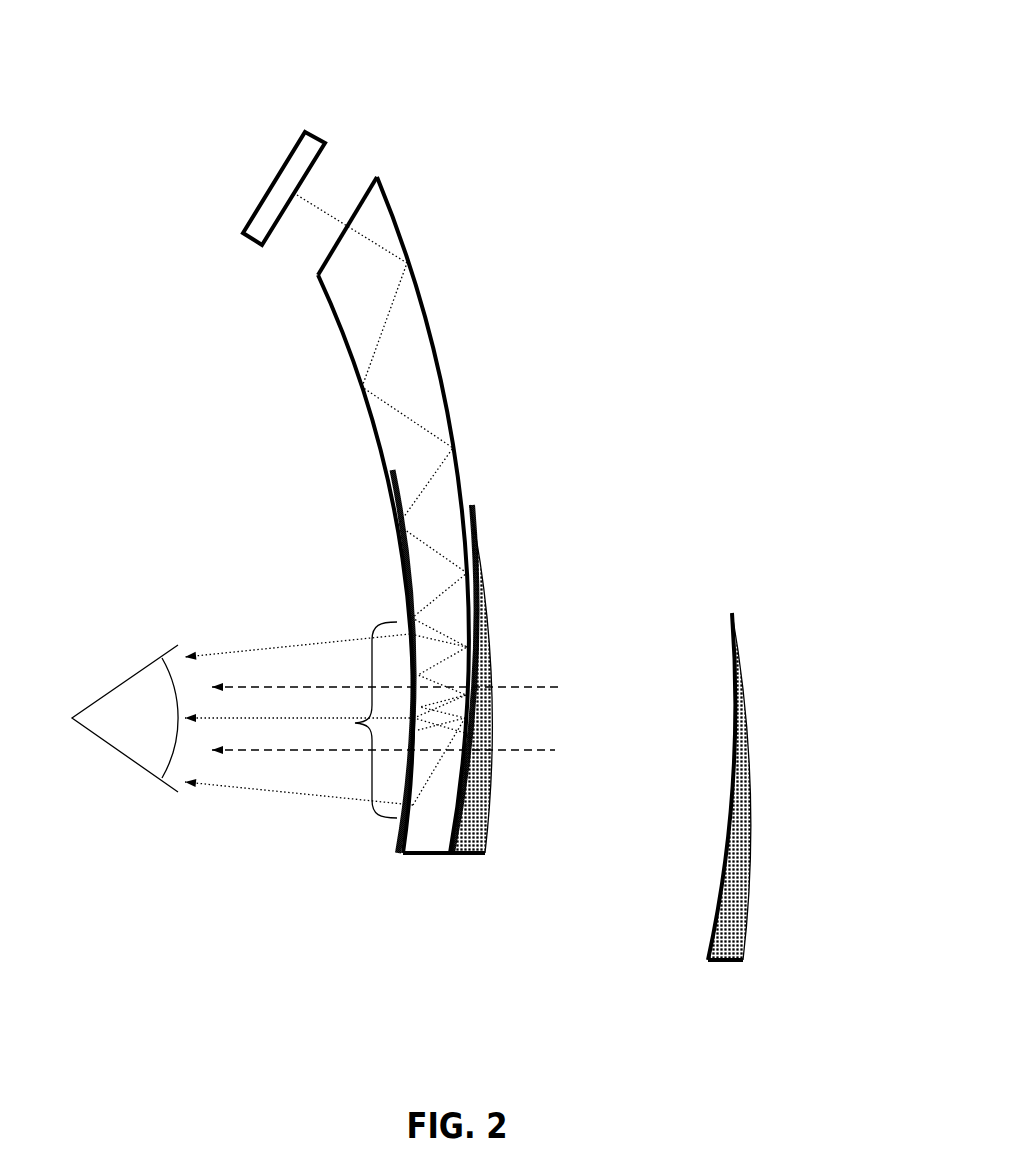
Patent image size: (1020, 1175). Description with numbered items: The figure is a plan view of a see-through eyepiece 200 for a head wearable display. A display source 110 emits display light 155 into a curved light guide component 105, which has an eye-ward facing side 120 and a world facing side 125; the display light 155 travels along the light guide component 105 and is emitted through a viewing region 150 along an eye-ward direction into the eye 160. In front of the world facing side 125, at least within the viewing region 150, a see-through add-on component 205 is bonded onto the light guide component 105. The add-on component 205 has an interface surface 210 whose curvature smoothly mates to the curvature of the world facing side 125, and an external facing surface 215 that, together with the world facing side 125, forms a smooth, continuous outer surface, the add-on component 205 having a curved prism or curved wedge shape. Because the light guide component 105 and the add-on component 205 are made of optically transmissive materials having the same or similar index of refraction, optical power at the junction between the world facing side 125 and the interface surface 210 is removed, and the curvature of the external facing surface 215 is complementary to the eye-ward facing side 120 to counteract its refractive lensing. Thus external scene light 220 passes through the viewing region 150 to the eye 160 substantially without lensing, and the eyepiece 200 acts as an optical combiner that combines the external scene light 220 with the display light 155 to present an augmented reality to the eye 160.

The see-through eyepiece 200 is at (655, 62).
The display source 110 is at (304, 132).
The display light 155 is at (320, 208).
The light guide component 105 is at (409, 515).
The world facing side 125 is at (482, 397).
The eye-ward facing side 120 is at (335, 420).
The viewing region 150 is at (355, 722).
The eye 160 is at (120, 725).
The external scene light 220 is at (542, 687).
The add-on component 205 is at (632, 732).
The interface surface 210 is at (723, 880).
The external facing surface 215 is at (753, 847).